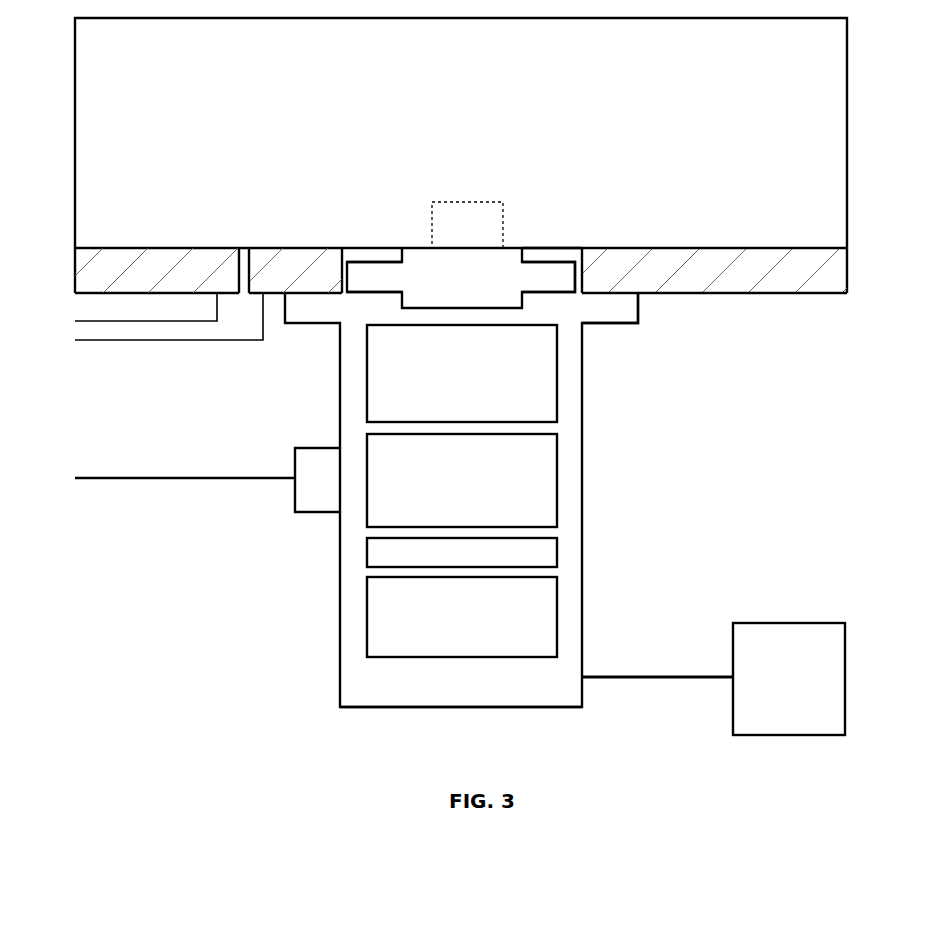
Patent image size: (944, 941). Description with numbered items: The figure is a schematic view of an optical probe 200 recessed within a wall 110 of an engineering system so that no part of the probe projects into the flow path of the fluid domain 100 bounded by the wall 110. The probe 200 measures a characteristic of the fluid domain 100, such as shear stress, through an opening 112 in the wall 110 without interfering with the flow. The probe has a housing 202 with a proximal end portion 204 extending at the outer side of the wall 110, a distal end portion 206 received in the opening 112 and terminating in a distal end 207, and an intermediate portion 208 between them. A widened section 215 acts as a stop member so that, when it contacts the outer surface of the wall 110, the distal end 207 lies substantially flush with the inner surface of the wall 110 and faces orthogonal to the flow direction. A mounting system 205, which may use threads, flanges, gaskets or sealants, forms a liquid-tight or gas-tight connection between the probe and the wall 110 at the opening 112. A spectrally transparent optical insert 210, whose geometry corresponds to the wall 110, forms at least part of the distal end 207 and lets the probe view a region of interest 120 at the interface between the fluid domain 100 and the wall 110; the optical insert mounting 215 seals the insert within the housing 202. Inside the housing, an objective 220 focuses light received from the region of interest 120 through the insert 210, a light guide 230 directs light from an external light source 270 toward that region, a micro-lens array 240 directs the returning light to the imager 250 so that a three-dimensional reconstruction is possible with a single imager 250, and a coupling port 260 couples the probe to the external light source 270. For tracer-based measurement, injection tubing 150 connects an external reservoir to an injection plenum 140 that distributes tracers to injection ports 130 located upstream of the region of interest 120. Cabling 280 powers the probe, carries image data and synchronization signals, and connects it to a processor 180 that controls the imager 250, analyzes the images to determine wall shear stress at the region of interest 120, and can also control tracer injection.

The fluid domain 100 is at (461, 155).
The wall 110 is at (792, 267).
The opening 112 is at (354, 238).
The region of interest 120 is at (452, 202).
The injection ports 130 is at (241, 238).
The injection plenum 140 is at (227, 310).
The injection tubing 150 is at (183, 340).
The processor 180 is at (789, 679).
The optical probe 200 is at (461, 691).
The housing 202 is at (338, 592).
The proximal end portion 204 is at (615, 638).
The mounting system 205 is at (655, 268).
The distal end portion 206 is at (608, 345).
The distal end 207 is at (527, 248).
The intermediate portion 208 is at (650, 496).
The optical insert 210 is at (461, 278).
The optical insert mounting 215 is at (550, 260).
The objective 220 is at (462, 373).
The light guide 230 is at (462, 480).
The micro-lens array 240 is at (462, 552).
The imager 250 is at (462, 617).
The coupling port 260 is at (315, 512).
The external light source 270 is at (227, 475).
The cabling 280 is at (664, 675).